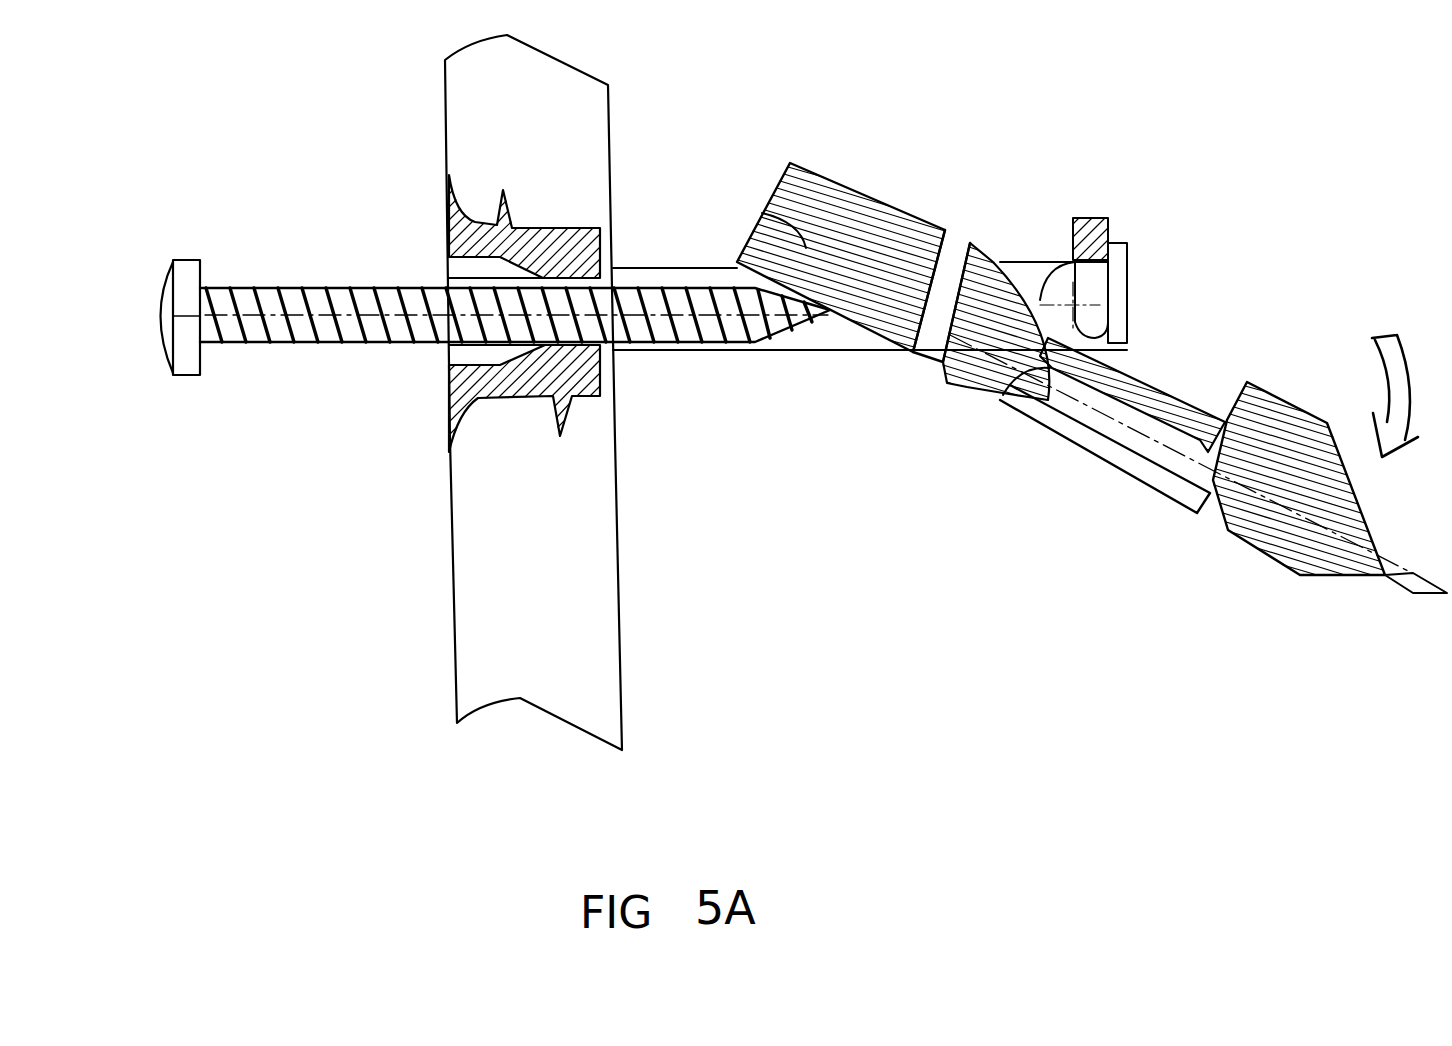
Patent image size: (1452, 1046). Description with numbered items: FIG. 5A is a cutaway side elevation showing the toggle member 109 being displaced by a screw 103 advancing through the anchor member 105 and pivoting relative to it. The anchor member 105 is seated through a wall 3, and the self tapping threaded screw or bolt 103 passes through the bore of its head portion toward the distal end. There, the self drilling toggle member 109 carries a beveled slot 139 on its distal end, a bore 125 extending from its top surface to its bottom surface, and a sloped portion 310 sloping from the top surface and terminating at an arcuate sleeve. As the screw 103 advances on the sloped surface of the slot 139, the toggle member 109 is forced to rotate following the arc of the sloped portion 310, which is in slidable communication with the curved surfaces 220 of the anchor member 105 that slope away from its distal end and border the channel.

The wall 3 is at (450, 572).
The self tapping threaded screw or bolt 103 is at (283, 263).
The anchor member 105 is at (462, 245).
The self drilling toggle member 109 is at (1020, 486).
The beveled slot 139 is at (765, 236).
The bore 125 is at (968, 238).
The sloped portion 310 is at (1046, 340).
The curved surfaces 220 is at (1040, 262).